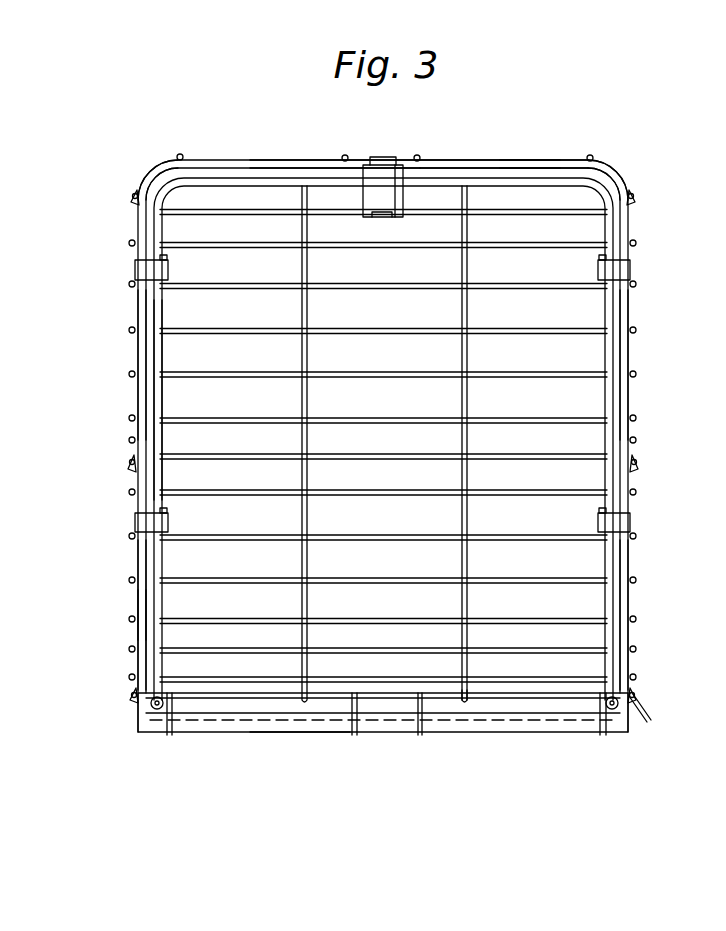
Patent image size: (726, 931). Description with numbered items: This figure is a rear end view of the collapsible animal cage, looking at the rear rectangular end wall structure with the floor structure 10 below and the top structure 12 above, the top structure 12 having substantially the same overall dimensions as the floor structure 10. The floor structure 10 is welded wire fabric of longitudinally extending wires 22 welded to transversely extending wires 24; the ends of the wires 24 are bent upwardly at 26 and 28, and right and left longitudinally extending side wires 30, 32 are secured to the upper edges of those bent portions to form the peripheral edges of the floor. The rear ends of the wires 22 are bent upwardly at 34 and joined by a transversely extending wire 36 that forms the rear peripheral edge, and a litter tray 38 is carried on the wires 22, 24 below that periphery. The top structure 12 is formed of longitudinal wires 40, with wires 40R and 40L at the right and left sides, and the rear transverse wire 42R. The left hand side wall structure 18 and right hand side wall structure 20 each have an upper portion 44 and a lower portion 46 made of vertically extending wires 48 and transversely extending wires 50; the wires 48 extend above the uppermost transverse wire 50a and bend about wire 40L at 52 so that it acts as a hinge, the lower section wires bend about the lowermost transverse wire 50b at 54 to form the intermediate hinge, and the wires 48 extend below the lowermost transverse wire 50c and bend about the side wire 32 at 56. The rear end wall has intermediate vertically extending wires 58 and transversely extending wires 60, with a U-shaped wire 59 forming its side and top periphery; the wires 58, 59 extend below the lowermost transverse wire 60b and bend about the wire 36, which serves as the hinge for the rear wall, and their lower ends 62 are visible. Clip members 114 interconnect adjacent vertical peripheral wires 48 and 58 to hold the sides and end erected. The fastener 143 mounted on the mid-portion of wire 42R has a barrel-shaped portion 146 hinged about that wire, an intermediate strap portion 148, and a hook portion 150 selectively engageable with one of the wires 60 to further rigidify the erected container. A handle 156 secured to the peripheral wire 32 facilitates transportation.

The floor structure 10 is at (297, 760).
The top structure 12 is at (530, 158).
The left hand rectangular side wall structure 18 is at (648, 381).
The right hand rectangular side wall structure 20 is at (118, 391).
The longitudinally extending wires 22 is at (356, 710).
The transversely extending wires 24 is at (260, 733).
The upwardly bent portion 26 is at (632, 730).
The upwardly bent portion 28 is at (142, 718).
The longitudinally extending side wire 30 is at (632, 694).
The longitudinally extending side wire 32 is at (150, 702).
The upwardly bent rear end portions 34 is at (421, 710).
The transversely extending wire 36 is at (490, 699).
The litter tray 38 is at (560, 708).
The longitudinally extending wires 40 is at (343, 157).
The longitudinal wire 40R is at (137, 188).
The longitudinal wire 40L is at (632, 188).
The transversely extending wire 42R is at (451, 160).
The upper portion 44 is at (131, 314).
The lower portion 46 is at (131, 567).
The vertically extending wires 48 is at (132, 600).
The transversely extending wires 50 is at (129, 374).
The uppermost transverse wire 50a is at (129, 243).
The lowermost transverse wire 50b is at (132, 462).
The lowermost transverse wire 50c is at (130, 674).
The bend 52 is at (131, 195).
The bend 54 is at (128, 468).
The bend 56 is at (131, 694).
The intermediate vertically extending wires 58 is at (460, 393).
The U-shaped wire 59 is at (163, 396).
The transversely extending wires 60 is at (522, 378).
The lowermost transverse wire 60b is at (512, 677).
The lower end of vertical bar 62 is at (468, 703).
The clip members 114 is at (134, 272).
The fastener 143 is at (383, 157).
The barrel-shaped portion 146 is at (372, 158).
The intermediate strap portion 148 is at (405, 190).
The hook portion 150 is at (378, 218).
The handle 156 is at (651, 722).